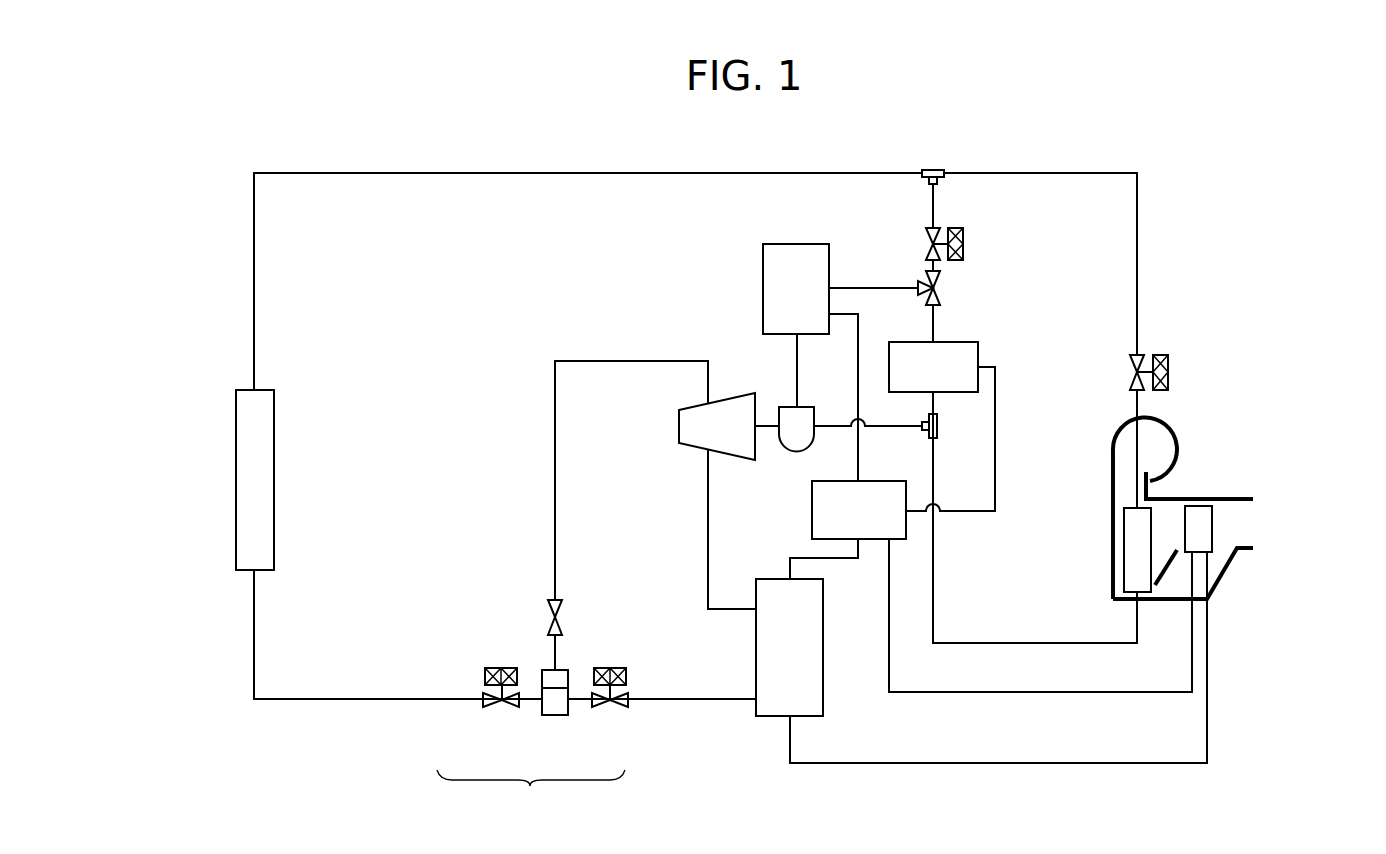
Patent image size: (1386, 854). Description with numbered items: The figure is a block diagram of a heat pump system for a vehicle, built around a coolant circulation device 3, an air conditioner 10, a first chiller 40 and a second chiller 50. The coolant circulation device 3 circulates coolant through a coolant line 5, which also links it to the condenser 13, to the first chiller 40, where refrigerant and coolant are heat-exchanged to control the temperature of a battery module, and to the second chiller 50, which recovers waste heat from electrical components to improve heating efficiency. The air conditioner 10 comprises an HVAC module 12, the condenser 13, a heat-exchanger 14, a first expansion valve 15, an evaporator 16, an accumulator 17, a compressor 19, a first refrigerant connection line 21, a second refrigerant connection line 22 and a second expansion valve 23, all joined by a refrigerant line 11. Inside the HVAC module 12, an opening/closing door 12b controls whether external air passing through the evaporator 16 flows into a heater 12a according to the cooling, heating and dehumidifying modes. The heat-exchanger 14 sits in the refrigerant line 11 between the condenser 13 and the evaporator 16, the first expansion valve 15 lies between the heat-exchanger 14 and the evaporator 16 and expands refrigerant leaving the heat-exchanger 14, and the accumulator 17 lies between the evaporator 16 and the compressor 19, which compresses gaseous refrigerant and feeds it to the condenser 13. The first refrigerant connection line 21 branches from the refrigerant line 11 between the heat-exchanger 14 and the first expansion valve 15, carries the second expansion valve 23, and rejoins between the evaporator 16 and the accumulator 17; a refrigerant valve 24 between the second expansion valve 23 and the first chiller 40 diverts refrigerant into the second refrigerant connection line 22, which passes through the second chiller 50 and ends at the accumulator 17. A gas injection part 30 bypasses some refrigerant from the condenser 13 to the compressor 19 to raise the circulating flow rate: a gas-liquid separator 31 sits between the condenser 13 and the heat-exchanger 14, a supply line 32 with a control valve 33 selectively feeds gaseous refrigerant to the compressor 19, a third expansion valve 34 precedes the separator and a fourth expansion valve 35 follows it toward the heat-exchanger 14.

The coolant circulation device 3 is at (812, 510).
The coolant line 5 is at (860, 325).
The air conditioner 10 is at (1155, 191).
The refrigerant line 11 is at (586, 172).
The HVAC module 12 is at (1233, 491).
The heater 12a is at (1212, 520).
The opening/closing door 12b is at (1167, 585).
The condenser 13 is at (756, 648).
The heat-exchanger 14 is at (236, 481).
The first expansion valve 15 is at (1170, 372).
The evaporator 16 is at (1124, 548).
The accumulator 17 is at (808, 406).
The compressor 19 is at (679, 426).
The first refrigerant connection line 21 is at (934, 205).
The second refrigerant connection line 22 is at (871, 287).
The second expansion valve 23 is at (964, 245).
The refrigerant valve 24 is at (941, 283).
The gas injection part 30 is at (531, 791).
The gas-liquid separator 31 is at (545, 716).
The supply line 32 is at (555, 578).
The control valve 33 is at (560, 612).
The third expansion valve 34 is at (605, 708).
The fourth expansion valve 35 is at (508, 708).
The first chiller 40 is at (978, 346).
The second chiller 50 is at (763, 290).